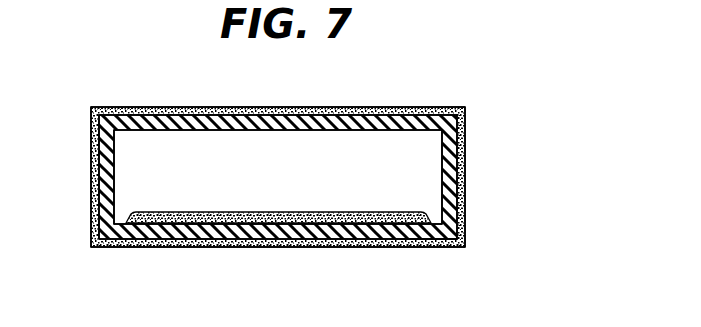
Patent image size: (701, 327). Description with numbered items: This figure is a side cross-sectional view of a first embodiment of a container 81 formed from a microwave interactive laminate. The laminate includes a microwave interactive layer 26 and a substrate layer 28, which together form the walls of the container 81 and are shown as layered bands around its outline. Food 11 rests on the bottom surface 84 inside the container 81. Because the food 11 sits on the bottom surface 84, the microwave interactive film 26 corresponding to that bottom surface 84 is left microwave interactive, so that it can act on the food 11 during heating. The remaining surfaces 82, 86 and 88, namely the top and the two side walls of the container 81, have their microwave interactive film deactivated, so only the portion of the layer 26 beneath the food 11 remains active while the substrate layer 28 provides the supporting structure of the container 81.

The container 81 is at (527, 102).
The surface 82 is at (426, 104).
The bottom surface 84 is at (361, 251).
The surface 86 is at (468, 184).
The surface 88 is at (88, 163).
The microwave interactive layer 26 is at (199, 240).
The substrate layer 28 is at (437, 249).
The food 11 is at (340, 212).